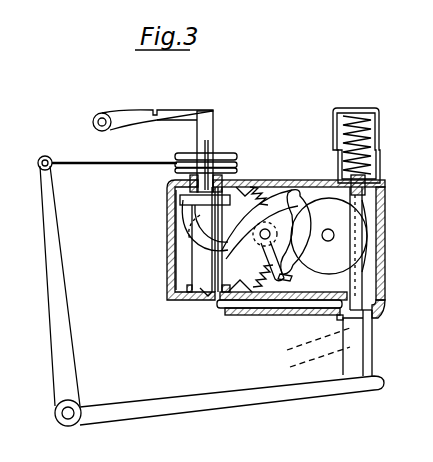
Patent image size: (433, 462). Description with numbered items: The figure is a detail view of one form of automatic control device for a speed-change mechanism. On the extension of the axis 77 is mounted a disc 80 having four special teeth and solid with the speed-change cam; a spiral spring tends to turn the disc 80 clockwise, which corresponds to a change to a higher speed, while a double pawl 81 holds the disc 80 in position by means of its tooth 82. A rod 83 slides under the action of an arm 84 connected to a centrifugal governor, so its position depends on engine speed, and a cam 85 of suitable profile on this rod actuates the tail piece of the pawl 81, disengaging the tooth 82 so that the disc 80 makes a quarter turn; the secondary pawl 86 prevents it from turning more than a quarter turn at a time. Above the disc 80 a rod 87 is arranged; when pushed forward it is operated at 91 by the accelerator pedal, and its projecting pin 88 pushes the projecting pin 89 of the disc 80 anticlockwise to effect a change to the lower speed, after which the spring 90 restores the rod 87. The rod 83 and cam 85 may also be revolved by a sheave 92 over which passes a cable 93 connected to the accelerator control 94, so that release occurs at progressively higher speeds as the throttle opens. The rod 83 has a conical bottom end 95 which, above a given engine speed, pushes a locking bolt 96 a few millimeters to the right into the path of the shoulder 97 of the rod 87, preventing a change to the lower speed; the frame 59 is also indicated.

The frame 59 is at (432, 396).
The axis 77 is at (329, 236).
The disc 80 is at (304, 196).
The double pawl 81 is at (240, 232).
The tooth 82 is at (290, 190).
The rod 83 is at (197, 243).
The arm 84 is at (153, 125).
The cam 85 is at (190, 200).
The secondary pawl 86 is at (270, 262).
The rod 87 is at (366, 350).
The projecting pin 88 is at (358, 280).
The projecting pin 89 is at (353, 258).
The spring 90 is at (379, 133).
The operating point 91 is at (350, 368).
The sheave 92 is at (197, 122).
The cable 93 is at (118, 162).
The accelerator control 94 is at (60, 289).
The conical bottom end 95 is at (205, 292).
The locking bolt 96 is at (242, 304).
The shoulder 97 is at (330, 313).